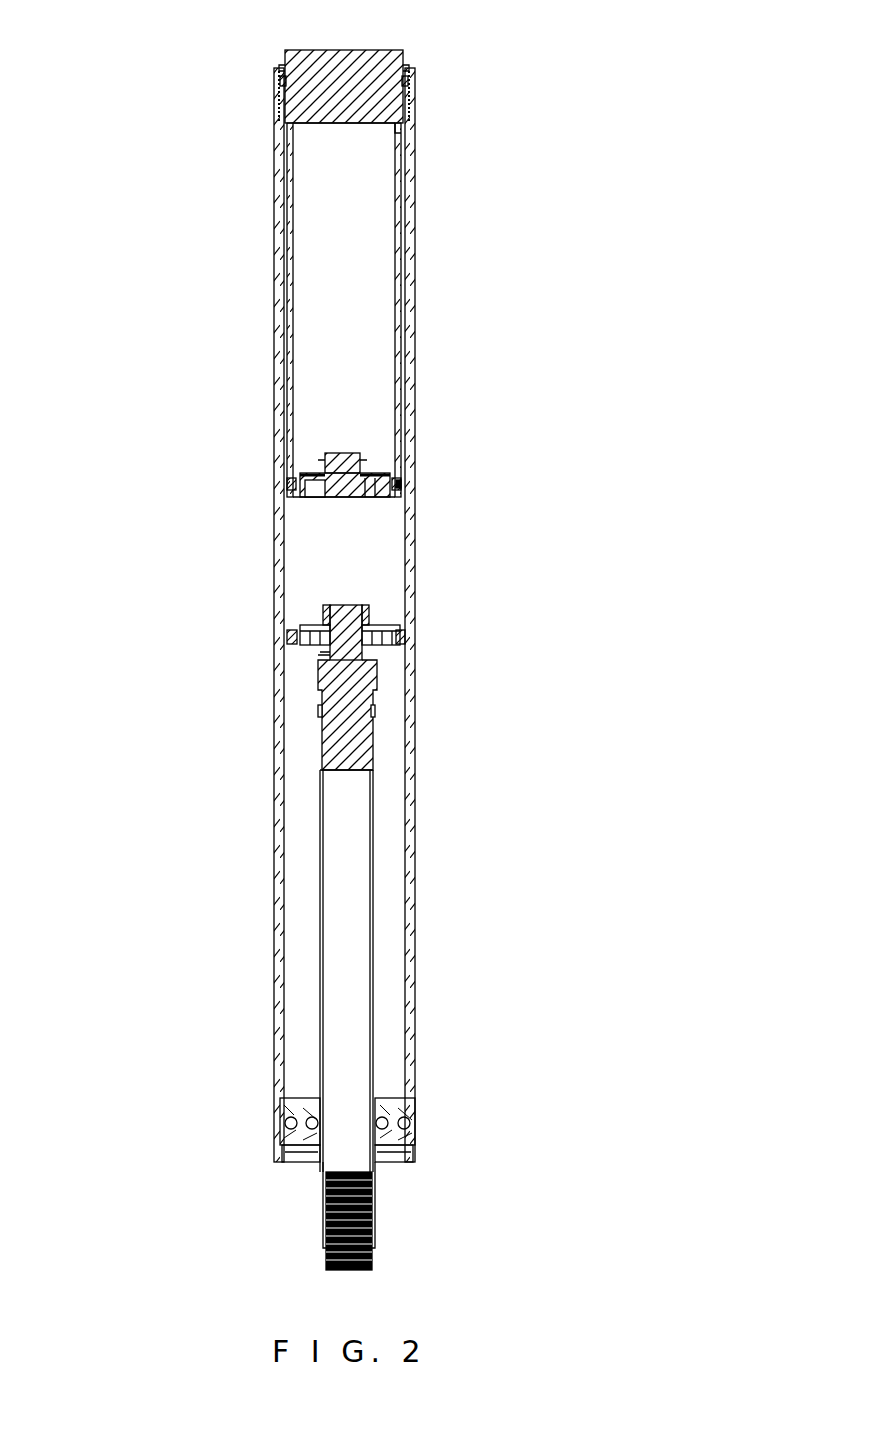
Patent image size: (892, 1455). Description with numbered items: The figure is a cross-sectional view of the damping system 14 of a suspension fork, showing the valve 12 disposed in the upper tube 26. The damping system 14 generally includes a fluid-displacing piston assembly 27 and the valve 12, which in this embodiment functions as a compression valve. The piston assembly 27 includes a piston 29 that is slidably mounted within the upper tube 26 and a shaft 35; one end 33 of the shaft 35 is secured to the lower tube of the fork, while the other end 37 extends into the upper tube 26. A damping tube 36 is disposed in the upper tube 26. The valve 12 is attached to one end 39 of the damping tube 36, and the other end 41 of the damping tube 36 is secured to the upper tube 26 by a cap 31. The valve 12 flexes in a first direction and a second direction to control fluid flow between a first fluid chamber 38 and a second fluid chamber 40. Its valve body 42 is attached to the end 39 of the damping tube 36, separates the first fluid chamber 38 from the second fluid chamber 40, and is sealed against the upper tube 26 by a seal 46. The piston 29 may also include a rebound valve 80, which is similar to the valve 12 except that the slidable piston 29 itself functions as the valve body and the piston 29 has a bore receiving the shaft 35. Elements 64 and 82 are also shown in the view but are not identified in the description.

The valve 12 is at (370, 472).
The damping system 14 is at (240, 580).
The upper tube 26 is at (413, 772).
The piston assembly 27 is at (320, 703).
The piston 29 is at (300, 640).
The cap 31 is at (358, 75).
The one end of the shaft 33 is at (375, 1225).
The shaft 35 is at (375, 845).
The damping tube 36 is at (403, 213).
The other end of the shaft 37 is at (373, 607).
The first fluid chamber 38 is at (365, 305).
The end of the damping tube 39 is at (400, 465).
The second fluid chamber 40 is at (393, 566).
The other end of the damping tube 41 is at (400, 130).
The valve body 42 is at (345, 488).
The seal 46 is at (400, 490).
The piston boss 64 is at (375, 470).
The rebound valve 80 is at (305, 660).
The piston body 82 is at (390, 712).